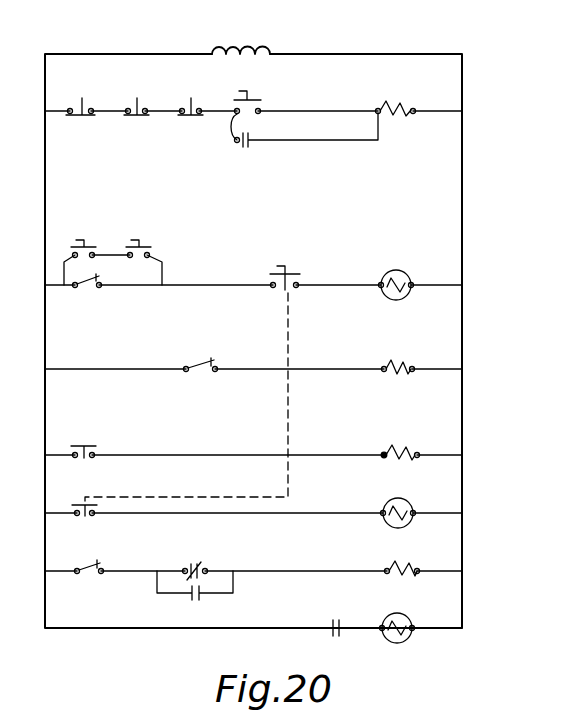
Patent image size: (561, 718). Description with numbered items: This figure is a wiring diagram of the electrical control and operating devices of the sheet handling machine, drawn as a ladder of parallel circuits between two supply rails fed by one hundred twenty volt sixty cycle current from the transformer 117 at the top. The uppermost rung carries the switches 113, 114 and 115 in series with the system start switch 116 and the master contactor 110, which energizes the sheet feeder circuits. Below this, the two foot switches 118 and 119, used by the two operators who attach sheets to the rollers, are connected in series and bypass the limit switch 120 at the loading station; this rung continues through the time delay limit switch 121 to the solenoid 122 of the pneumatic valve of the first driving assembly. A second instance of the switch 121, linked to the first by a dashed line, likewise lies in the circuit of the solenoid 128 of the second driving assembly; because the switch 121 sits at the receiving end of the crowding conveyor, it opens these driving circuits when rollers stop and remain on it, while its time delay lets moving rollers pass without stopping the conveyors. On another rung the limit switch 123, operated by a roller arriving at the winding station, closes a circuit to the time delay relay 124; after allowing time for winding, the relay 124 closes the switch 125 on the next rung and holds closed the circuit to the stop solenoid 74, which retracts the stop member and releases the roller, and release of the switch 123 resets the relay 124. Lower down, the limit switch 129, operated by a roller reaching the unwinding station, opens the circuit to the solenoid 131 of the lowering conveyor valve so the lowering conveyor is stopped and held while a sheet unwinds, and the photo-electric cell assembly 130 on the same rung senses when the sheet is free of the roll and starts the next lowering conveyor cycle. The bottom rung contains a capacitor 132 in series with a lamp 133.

The transformer 117 is at (232, 50).
The switch 113 is at (70, 106).
The switch 114 is at (128, 106).
The switch 115 is at (184, 106).
The system start switch 116 is at (243, 99).
The master contactor 110 is at (392, 120).
The foot switch 118 is at (70, 242).
The foot switch 119 is at (118, 246).
The limit switch 120 is at (94, 289).
The time delay limit switch 121 is at (289, 272).
The solenoid 122 is at (389, 271).
The limit switch 123 is at (207, 373).
The time delay relay 124 is at (391, 376).
The switch 125 is at (85, 445).
The stop solenoid 74 is at (385, 452).
The solenoid 128 is at (392, 498).
The limit switch 129 is at (86, 581).
The photo-electric cell assembly 130 is at (210, 566).
The solenoid 131 is at (400, 568).
The capacitor 132 is at (339, 616).
The indicator lamp 133 is at (405, 644).